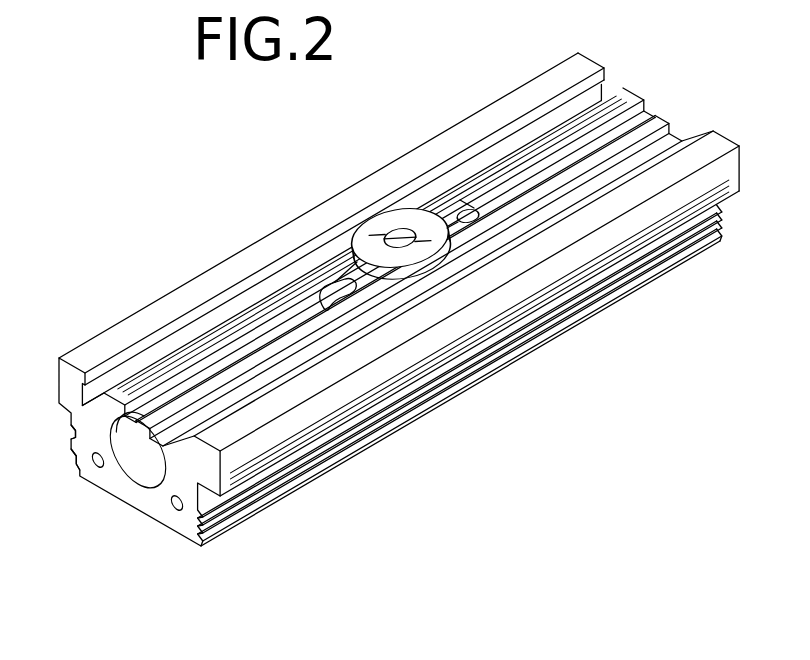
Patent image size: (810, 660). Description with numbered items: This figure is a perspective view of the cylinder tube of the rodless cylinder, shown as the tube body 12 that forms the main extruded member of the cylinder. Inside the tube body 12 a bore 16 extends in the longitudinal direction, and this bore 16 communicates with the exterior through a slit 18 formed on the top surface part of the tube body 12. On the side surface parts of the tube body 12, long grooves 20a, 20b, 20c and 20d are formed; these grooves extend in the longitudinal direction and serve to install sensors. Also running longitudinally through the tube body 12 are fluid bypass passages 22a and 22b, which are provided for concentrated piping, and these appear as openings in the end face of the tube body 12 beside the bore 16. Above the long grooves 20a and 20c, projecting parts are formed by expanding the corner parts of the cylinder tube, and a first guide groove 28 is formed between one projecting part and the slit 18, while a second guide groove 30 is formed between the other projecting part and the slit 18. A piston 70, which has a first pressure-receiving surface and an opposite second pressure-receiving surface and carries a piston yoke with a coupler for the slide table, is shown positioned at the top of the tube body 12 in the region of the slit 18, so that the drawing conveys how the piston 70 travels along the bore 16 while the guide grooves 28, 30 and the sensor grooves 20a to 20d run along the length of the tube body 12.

The tube body 12 is at (497, 100).
The bore 16 is at (143, 463).
The slit 18 is at (188, 388).
The long groove 20a is at (228, 508).
The long groove 20b is at (210, 517).
The long groove 20c is at (74, 432).
The long groove 20d is at (72, 452).
The fluid bypass passage 22a is at (173, 510).
The fluid bypass passage 22b is at (97, 470).
The first guide groove 28 is at (290, 366).
The second guide groove 30 is at (225, 308).
The piston 70 is at (413, 198).